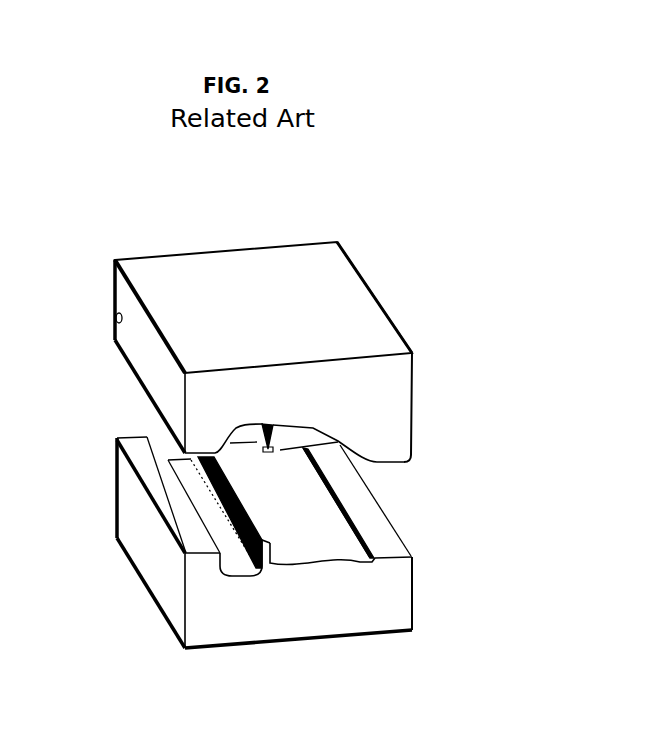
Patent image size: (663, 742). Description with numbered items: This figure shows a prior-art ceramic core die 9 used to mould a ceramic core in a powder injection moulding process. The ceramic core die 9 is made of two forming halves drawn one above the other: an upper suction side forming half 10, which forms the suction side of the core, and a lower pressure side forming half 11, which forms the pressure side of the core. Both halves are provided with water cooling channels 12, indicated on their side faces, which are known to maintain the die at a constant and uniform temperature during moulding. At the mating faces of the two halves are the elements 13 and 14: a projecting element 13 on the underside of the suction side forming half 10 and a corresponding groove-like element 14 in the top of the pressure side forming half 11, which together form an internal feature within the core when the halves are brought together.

The ceramic core die 9 is at (306, 246).
The suction side forming half 10 is at (312, 382).
The pressure side forming half 11 is at (336, 580).
The water cooling channels 12 is at (177, 583).
The element forming an internal feature 13 is at (274, 438).
The element forming an internal feature 14 is at (262, 521).